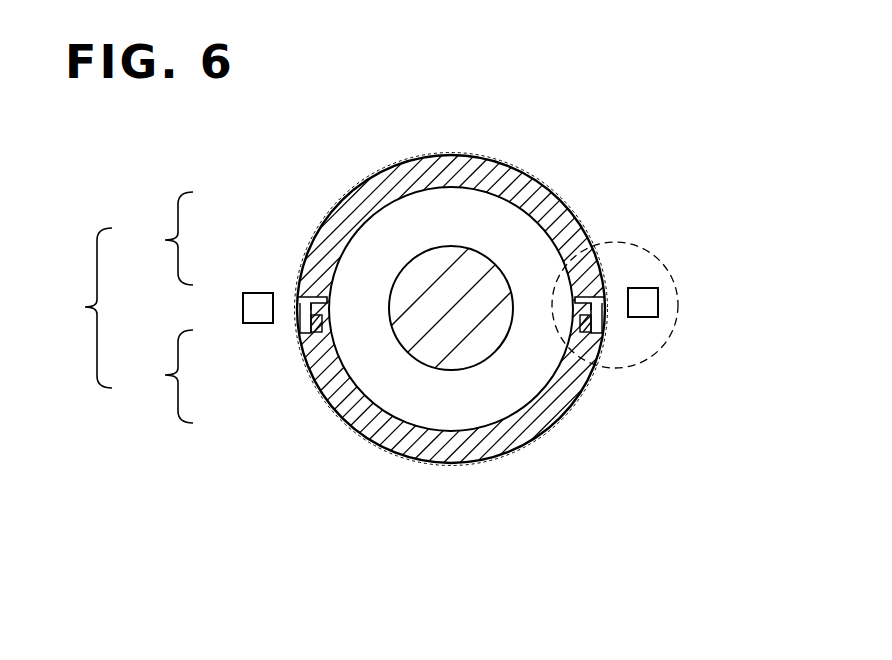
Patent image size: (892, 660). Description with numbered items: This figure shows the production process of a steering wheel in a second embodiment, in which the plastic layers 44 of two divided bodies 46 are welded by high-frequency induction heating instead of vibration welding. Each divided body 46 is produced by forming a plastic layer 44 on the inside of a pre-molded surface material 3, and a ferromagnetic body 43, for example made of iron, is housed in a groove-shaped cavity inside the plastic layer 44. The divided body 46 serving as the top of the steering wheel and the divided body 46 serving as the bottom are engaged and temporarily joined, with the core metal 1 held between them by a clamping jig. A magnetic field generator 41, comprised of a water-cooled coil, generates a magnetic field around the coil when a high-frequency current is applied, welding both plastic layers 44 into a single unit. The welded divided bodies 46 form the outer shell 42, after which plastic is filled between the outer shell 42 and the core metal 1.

The core metal 1 is at (475, 268).
The surface material 3 is at (318, 228).
The magnetic field generator 41 is at (649, 308).
The outer shell 42 is at (79, 308).
The ferromagnetic body 43 is at (575, 352).
The plastic layer 44 is at (312, 268).
The divided body 46 is at (160, 307).